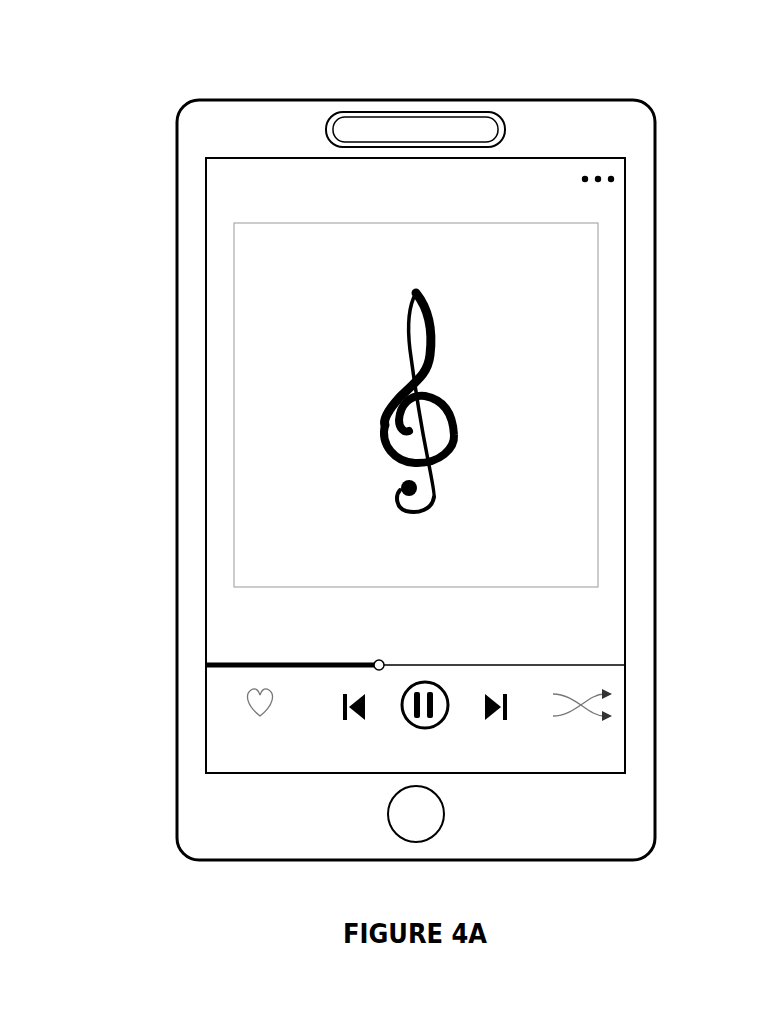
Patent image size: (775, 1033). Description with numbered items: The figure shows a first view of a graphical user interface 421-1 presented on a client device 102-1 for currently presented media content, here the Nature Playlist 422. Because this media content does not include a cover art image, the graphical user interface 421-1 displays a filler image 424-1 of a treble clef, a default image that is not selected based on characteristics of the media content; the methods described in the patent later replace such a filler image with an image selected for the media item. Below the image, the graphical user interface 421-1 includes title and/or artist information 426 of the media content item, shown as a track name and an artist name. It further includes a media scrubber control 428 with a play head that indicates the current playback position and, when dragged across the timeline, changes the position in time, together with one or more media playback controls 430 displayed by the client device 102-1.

The client device 102-1 is at (420, 100).
The graphical user interface 421-1 is at (617, 197).
The Nature Playlist 422 is at (340, 185).
The filler image 424-1 is at (234, 371).
The title and/or artist information 426 is at (376, 619).
The media scrubber control 428 is at (228, 663).
The media playback controls 430 is at (632, 671).